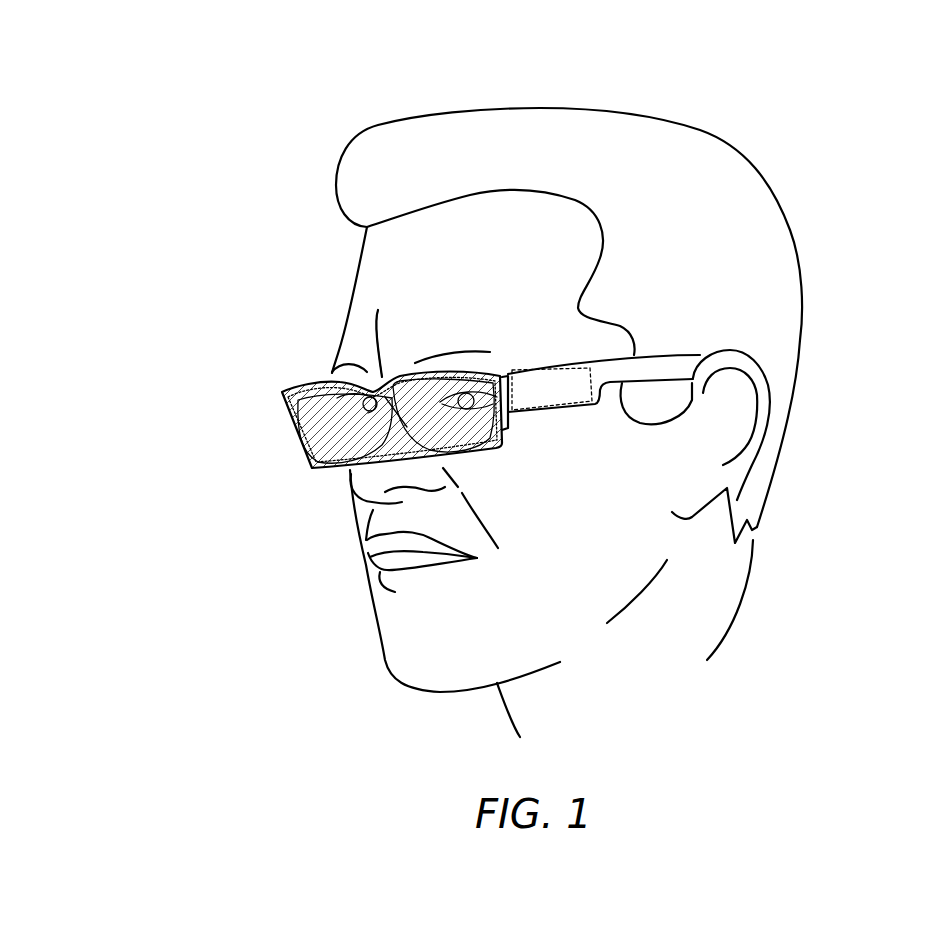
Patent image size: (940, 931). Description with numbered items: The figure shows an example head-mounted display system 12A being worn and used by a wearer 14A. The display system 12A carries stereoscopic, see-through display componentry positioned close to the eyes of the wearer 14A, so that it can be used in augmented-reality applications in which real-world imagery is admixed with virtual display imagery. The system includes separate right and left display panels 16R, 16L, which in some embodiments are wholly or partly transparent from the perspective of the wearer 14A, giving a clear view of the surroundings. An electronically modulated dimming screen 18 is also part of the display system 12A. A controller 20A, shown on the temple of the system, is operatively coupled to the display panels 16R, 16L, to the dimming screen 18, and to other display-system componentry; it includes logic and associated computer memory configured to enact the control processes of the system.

The wearer 14A is at (859, 182).
The head-mounted display system 12A is at (260, 425).
The right display panel 16R is at (303, 435).
The left display panel 16L is at (495, 423).
The electronically modulated dimming screen 18 is at (378, 309).
The controller 20A is at (563, 399).